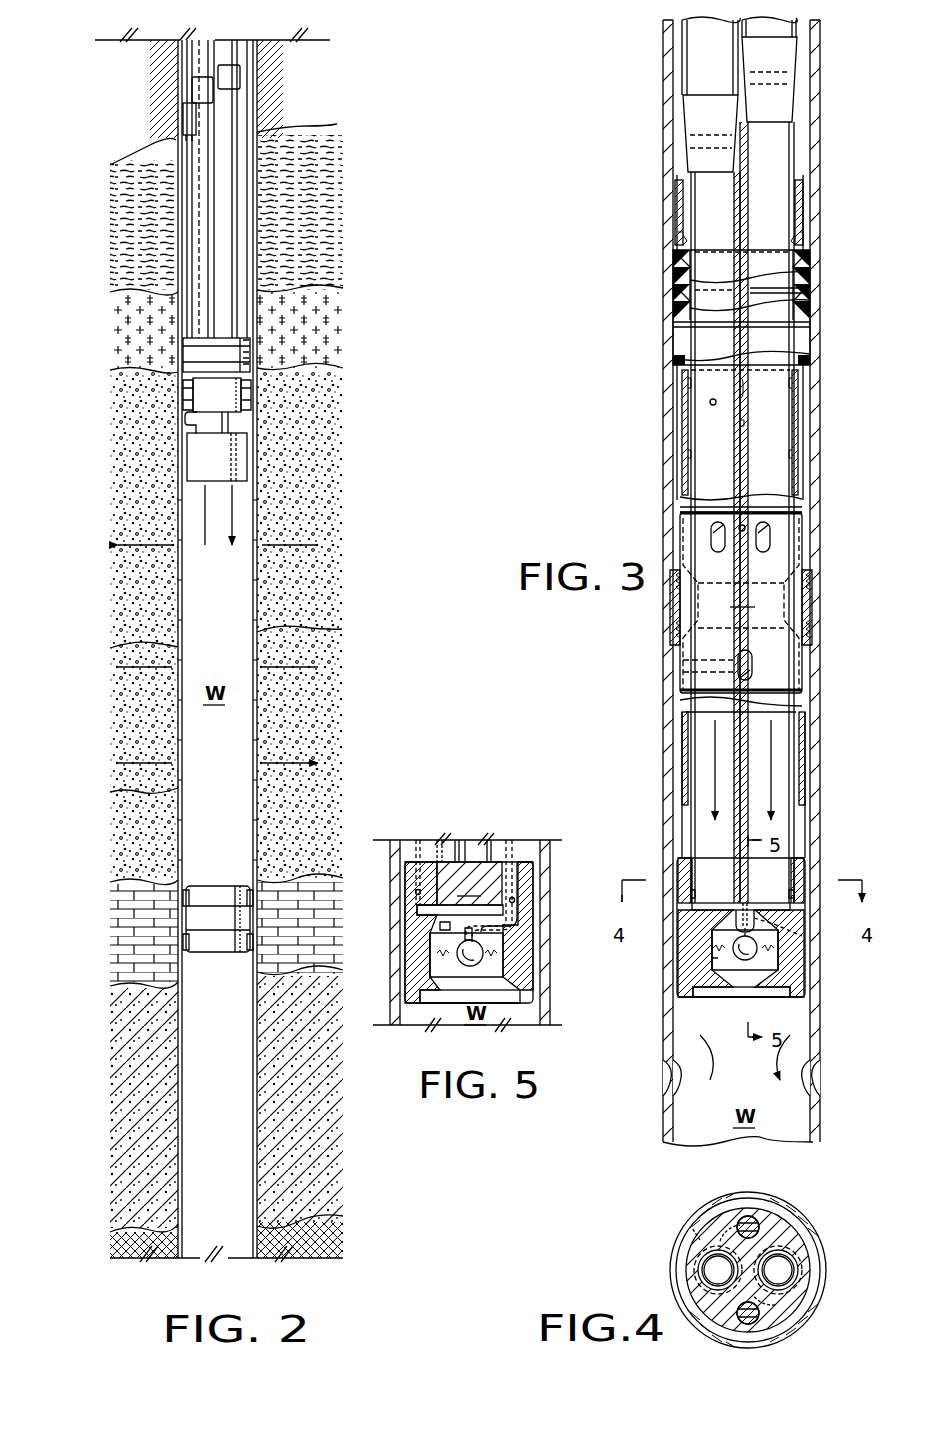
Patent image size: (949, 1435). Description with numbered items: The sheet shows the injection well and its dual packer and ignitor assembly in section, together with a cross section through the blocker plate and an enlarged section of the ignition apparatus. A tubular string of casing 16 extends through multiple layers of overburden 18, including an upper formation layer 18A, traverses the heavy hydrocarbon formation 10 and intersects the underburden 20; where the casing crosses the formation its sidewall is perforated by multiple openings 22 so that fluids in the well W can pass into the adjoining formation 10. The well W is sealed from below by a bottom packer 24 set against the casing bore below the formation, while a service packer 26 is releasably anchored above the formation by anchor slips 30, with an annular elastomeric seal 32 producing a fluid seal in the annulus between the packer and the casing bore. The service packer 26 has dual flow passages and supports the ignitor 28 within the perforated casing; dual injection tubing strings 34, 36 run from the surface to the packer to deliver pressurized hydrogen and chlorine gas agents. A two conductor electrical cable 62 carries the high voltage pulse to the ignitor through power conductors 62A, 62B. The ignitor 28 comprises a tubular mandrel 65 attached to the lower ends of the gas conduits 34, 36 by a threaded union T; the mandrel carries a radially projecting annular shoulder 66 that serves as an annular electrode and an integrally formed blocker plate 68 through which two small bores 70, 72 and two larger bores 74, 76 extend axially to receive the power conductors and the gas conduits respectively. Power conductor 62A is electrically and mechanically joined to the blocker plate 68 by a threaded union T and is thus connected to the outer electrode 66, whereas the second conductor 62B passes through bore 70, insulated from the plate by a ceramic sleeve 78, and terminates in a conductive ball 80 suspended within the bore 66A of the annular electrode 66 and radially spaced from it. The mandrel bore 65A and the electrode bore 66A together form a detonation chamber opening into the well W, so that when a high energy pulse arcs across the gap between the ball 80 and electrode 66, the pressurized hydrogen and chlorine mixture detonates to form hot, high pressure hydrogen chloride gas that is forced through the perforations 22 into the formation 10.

In FIG. 2, the heavy hydrocarbon formation 10 is at (144, 631).
In FIG. 2, the casing 16 is at (260, 586).
In FIG. 3, the casing 16 is at (660, 398).
In FIG. 4, the casing 16 is at (746, 1190).
In FIG. 5, the casing 16 is at (550, 957).
In FIG. 2, the overburden 18 is at (290, 62).
In FIG. 2, the upper formation 18A is at (331, 326).
In FIG. 2, the underburden 20 is at (128, 938).
In FIG. 2, the openings 22 is at (256, 638).
In FIG. 3, the openings 22 is at (817, 1070).
In FIG. 2, the bottom packer 24 is at (224, 905).
In FIG. 2, the service packer 26 is at (192, 395).
In FIG. 3, the service packer 26 is at (742, 614).
In FIG. 2, the ignitor 28 is at (224, 468).
In FIG. 3, the ignitor 28 is at (698, 1008).
In FIG. 4, the ignitor 28 is at (778, 1221).
In FIG. 5, the ignitor 28 is at (444, 804).
In FIG. 2, the anchor slips 30 is at (248, 393).
In FIG. 3, the anchor slips 30 is at (807, 581).
In FIG. 2, the elastomeric seal 32 is at (194, 350).
In FIG. 3, the elastomeric seal 32 is at (675, 274).
In FIG. 2, the injection tubing string 34 is at (218, 104).
In FIG. 3, the injection tubing string 34 is at (778, 28).
In FIG. 4, the injection tubing string 34 is at (796, 1269).
In FIG. 5, the injection tubing string 34 is at (456, 842).
In FIG. 2, the injection tubing string 36 is at (192, 77).
In FIG. 3, the injection tubing string 36 is at (700, 72).
In FIG. 4, the injection tubing string 36 is at (694, 1269).
In FIG. 5, the injection tubing string 36 is at (439, 851).
In FIG. 2, the electrical cable 62 is at (182, 206).
In FIG. 4, the power conductor 62A is at (741, 1310).
In FIG. 5, the power conductor 62A is at (424, 843).
In FIG. 3, the power conductor 62B is at (784, 924).
In FIG. 4, the power conductor 62B is at (734, 1239).
In FIG. 5, the power conductor 62B is at (526, 833).
In FIG. 3, the tubular mandrel 65 is at (801, 867).
In FIG. 4, the tubular mandrel 65 is at (743, 1326).
In FIG. 5, the tubular mandrel 65 is at (520, 892).
In FIG. 3, the mandrel bore 65A is at (804, 999).
In FIG. 5, the mandrel bore 65A is at (424, 1001).
In FIG. 3, the annular shoulder 66 is at (790, 959).
In FIG. 5, the annular shoulder 66 is at (418, 952).
In FIG. 3, the annular electrode bore 66A is at (710, 956).
In FIG. 5, the annular electrode bore 66A is at (504, 936).
In FIG. 4, the blocker plate 68 is at (723, 1301).
In FIG. 5, the blocker plate 68 is at (469, 883).
In FIG. 4, the small bore 70 is at (748, 1222).
In FIG. 5, the small bore 70 is at (522, 861).
In FIG. 4, the small bore 72 is at (746, 1318).
In FIG. 5, the small bore 72 is at (420, 896).
In FIG. 3, the larger bore 74 is at (796, 895).
In FIG. 4, the larger bore 74 is at (798, 1269).
In FIG. 3, the larger bore 76 is at (691, 896).
In FIG. 4, the larger bore 76 is at (696, 1280).
In FIG. 4, the ceramic sleeve 78 is at (731, 1223).
In FIG. 5, the ceramic sleeve 78 is at (518, 903).
In FIG. 5, the conductive ball 80 is at (477, 961).
In FIG. 3, the threaded union T is at (693, 874).
In FIG. 4, the threaded union T is at (830, 1323).
In FIG. 5, the threaded union T is at (410, 875).